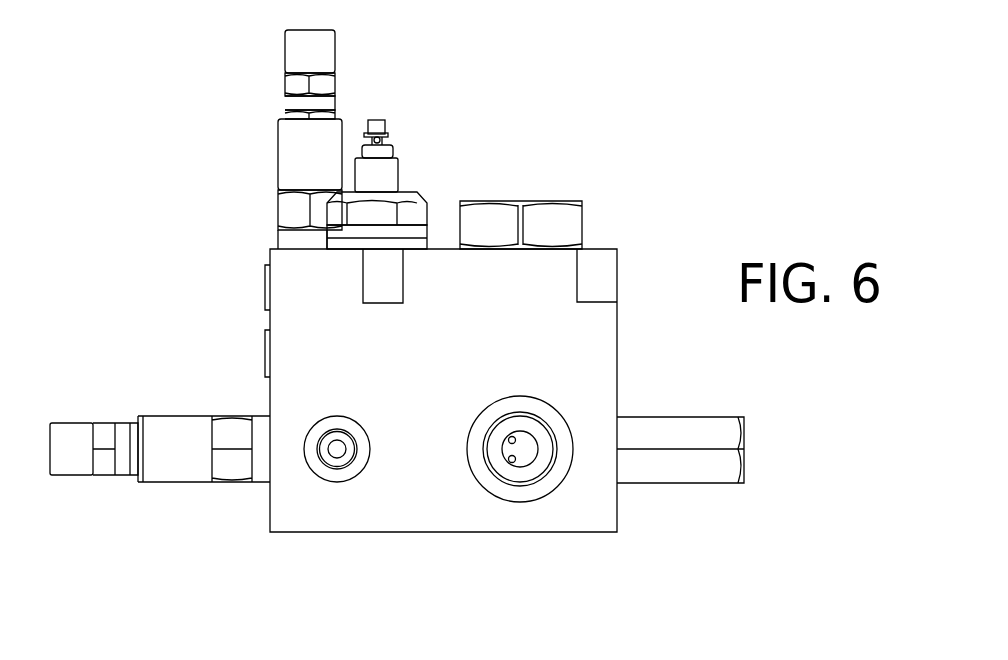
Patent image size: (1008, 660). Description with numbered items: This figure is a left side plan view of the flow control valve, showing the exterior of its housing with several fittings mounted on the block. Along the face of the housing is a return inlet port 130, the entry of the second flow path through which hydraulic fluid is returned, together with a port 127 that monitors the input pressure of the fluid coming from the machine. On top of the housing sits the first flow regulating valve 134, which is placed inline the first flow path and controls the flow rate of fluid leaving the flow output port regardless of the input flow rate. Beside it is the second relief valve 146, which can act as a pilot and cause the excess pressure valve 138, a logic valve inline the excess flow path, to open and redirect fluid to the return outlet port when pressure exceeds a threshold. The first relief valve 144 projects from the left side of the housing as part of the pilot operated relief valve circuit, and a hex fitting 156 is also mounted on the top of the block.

The port 127 is at (350, 432).
The return inlet port 130 is at (527, 467).
The first flow regulating valve 134 is at (408, 192).
The excess pressure valve 138 is at (678, 423).
The first relief valve 144 is at (168, 416).
The second relief valve 146 is at (281, 148).
The hex plug 156 is at (550, 208).